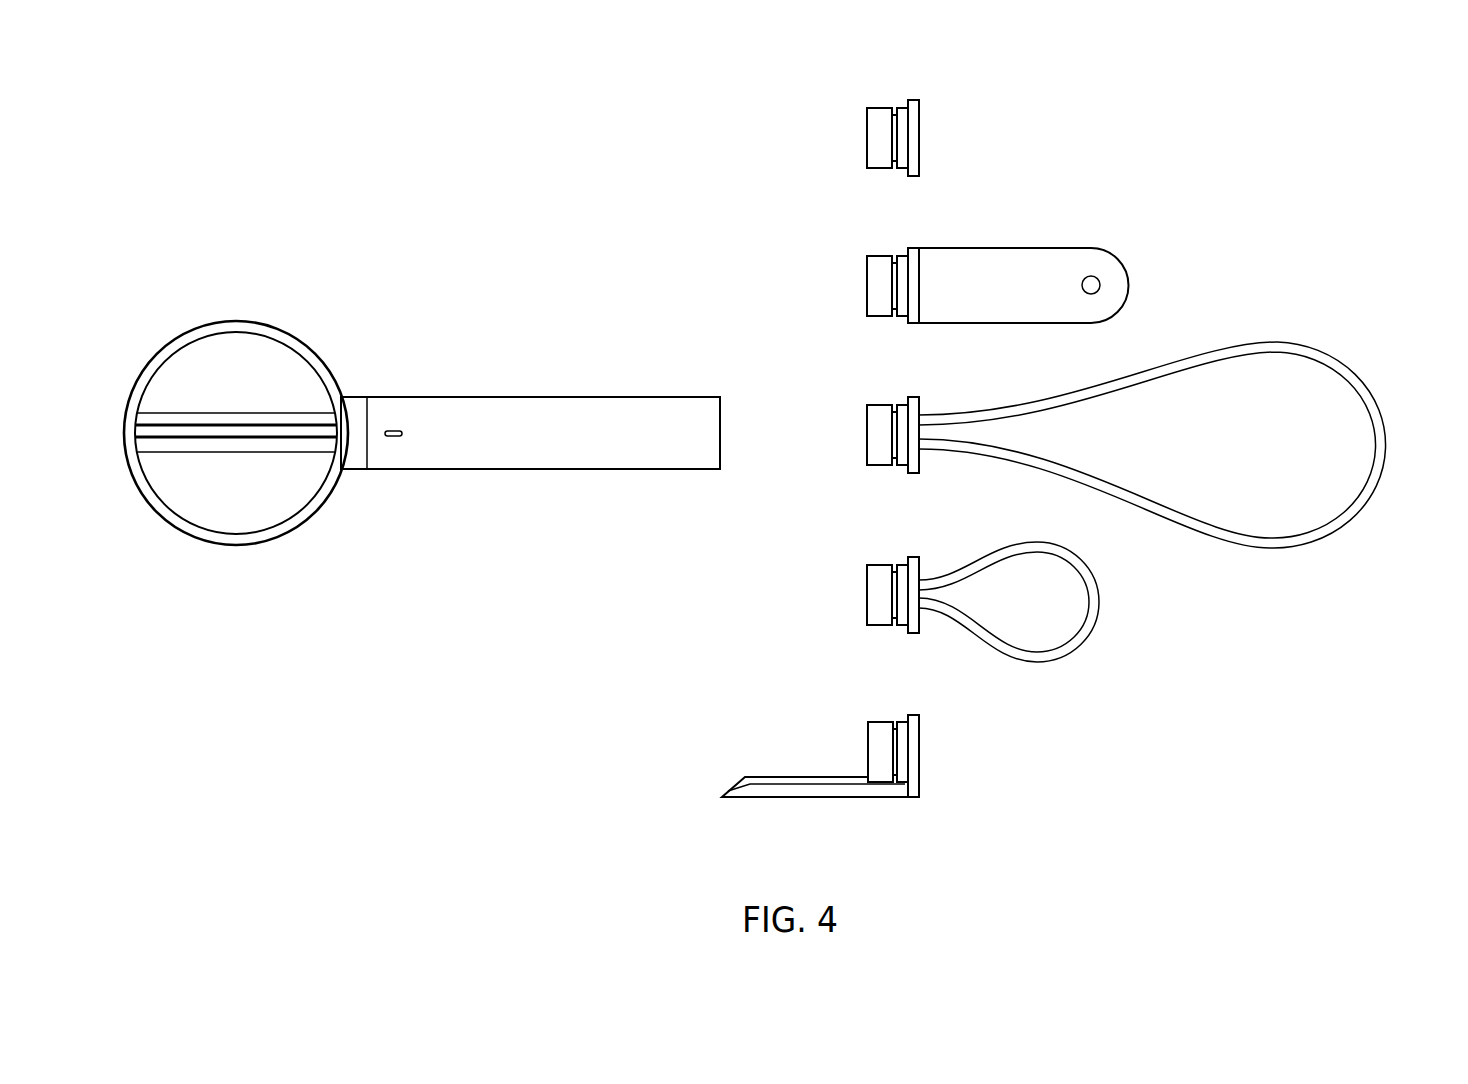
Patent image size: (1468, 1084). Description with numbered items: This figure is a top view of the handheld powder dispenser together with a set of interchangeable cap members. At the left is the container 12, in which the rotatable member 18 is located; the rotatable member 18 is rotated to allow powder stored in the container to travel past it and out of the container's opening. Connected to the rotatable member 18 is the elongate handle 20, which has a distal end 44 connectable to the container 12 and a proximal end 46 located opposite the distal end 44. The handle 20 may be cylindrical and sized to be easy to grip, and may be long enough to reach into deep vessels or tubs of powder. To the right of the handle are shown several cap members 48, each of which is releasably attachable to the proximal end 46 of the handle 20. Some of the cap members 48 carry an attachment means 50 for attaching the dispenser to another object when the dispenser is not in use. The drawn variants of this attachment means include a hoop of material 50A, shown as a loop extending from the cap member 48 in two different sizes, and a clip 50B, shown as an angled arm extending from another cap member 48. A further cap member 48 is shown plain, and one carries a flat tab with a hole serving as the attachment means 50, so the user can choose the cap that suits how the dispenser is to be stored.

The container 12 is at (185, 532).
The rotatable member 18 is at (172, 472).
The handle 20 is at (540, 470).
The distal end 44 is at (367, 397).
The proximal end 46 is at (720, 420).
The cap member 48 is at (903, 138).
The attachment means 50 is at (1106, 283).
The hoop of material 50A is at (1361, 505).
The clip 50B is at (836, 799).